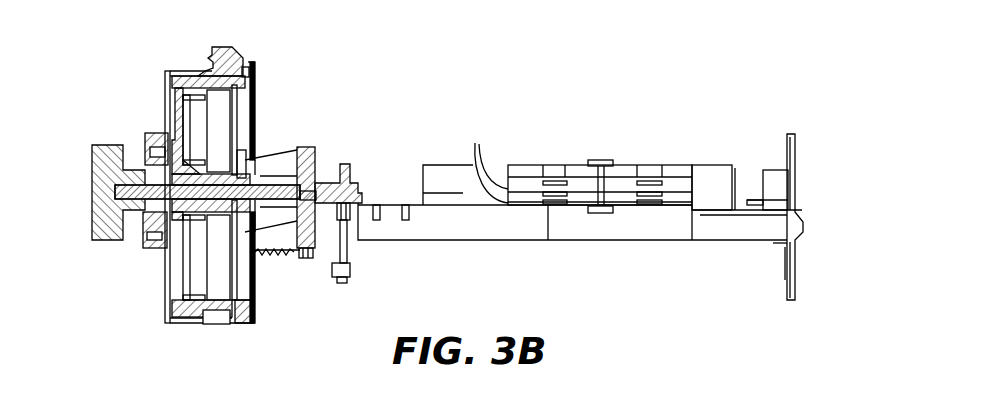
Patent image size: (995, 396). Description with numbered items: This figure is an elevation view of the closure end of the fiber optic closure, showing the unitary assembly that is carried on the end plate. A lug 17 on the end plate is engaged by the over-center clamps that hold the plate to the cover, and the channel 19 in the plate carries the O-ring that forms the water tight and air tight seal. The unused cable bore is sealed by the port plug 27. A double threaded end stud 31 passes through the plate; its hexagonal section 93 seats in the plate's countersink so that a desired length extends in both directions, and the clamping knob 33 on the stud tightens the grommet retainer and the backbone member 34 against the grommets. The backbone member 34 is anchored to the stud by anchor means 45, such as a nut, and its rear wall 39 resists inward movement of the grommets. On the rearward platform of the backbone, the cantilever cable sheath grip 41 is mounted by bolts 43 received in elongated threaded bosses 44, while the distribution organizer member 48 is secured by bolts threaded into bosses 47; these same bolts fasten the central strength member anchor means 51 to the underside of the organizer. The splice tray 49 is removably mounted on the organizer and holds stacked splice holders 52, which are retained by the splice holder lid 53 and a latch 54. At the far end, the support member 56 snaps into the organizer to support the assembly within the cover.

The lug 17 is at (226, 47).
The channel 19 is at (247, 72).
The port plug 27 is at (178, 97).
The double threaded end stud 31 is at (220, 203).
The clamping knob 33 is at (92, 225).
The backbone member 34 is at (273, 172).
The rear wall 39 is at (240, 155).
The cantilever cable sheath grip 41 is at (258, 258).
The bolt 43 is at (303, 261).
The elongated threaded boss 44 is at (317, 155).
The anchor means 45 is at (264, 254).
The boss 47 is at (354, 182).
The distribution organizer member 48 is at (438, 240).
The splice tray 49 is at (715, 165).
The central strength member anchor means 51 is at (352, 268).
The splice holder 52 is at (477, 152).
The splice holder lid 53 is at (529, 164).
The latch 54 is at (601, 160).
The support member 56 is at (797, 281).
The hexagonal section 93 is at (160, 213).